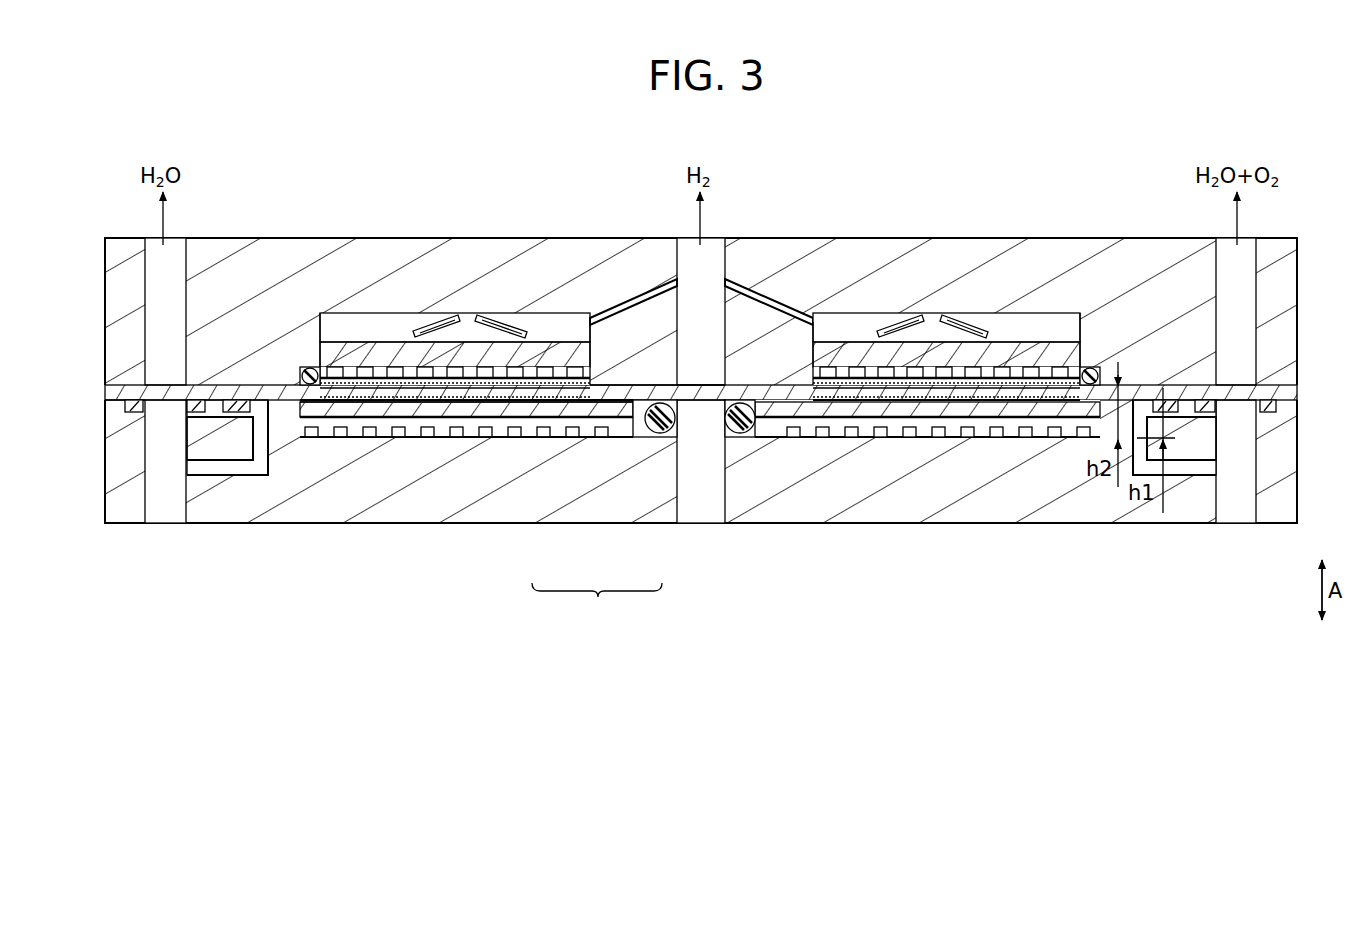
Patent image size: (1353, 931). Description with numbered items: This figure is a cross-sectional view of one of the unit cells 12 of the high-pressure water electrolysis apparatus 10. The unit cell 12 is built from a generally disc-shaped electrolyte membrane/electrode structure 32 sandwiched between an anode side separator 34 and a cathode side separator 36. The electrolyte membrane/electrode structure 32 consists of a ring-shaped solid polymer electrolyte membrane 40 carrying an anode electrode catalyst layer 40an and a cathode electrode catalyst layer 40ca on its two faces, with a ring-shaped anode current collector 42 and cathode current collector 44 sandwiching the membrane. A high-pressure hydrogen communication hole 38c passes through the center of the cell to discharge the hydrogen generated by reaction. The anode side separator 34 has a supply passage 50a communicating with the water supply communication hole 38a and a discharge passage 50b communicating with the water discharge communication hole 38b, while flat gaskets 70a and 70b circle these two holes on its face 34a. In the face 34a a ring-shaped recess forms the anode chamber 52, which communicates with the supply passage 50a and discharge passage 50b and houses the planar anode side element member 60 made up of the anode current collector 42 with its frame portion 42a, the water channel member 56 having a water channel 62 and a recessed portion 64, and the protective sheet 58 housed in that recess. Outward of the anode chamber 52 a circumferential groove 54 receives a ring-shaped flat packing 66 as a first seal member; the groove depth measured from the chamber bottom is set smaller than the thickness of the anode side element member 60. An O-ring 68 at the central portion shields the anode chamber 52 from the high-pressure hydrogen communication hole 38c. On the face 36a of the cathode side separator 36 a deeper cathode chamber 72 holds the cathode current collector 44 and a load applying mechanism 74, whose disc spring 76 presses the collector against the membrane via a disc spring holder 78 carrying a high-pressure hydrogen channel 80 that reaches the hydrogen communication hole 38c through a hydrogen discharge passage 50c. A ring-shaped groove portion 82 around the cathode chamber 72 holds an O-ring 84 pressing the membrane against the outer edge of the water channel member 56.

The unit cell 12 is at (824, 118).
The high-pressure water electrolysis apparatus 10 is at (864, 118).
The cathode side separator 36 is at (104, 237).
The anode side separator 34 is at (104, 524).
The electrolyte membrane/electrode structure 32 is at (104, 396).
The face of the anode side separator 34a is at (113, 384).
The face of the cathode side separator 36a is at (679, 393).
The water supply communication hole 38a is at (186, 505).
The water discharge communication hole 38b is at (1256, 505).
The high-pressure hydrogen communication hole 38c is at (725, 520).
The supply passage 50a is at (238, 478).
The discharge passage 50b is at (1190, 478).
The hydrogen discharge passage 50c is at (640, 300).
The flat packing 66 is at (220, 438).
The circumferential groove 54 is at (237, 399).
The groove portion 82 is at (300, 376).
The O-ring 84 is at (312, 368).
The cathode chamber 72 is at (350, 328).
The high-pressure hydrogen channel 80 is at (386, 356).
The disc spring 76 is at (438, 318).
The load applying mechanism 74 is at (485, 345).
The recessed portion 64 is at (527, 366).
The disc spring holder 78 is at (568, 356).
The cathode current collector 44 is at (583, 350).
The solid polymer electrolyte membrane 40 is at (838, 375).
The cathode electrode catalyst layer 40ca is at (1012, 385).
The anode electrode catalyst layer 40an is at (915, 402).
The O-ring 68 is at (745, 438).
The water channel 62 is at (455, 438).
The anode chamber 52 is at (370, 440).
The anode current collector 42 is at (488, 438).
The frame portion 42a is at (318, 440).
The protective sheet 58 is at (545, 412).
The water channel member 56 is at (636, 440).
The anode side element member 60 is at (597, 604).
The flat gasket 70a is at (133, 412).
The flat gasket 70b is at (1277, 410).